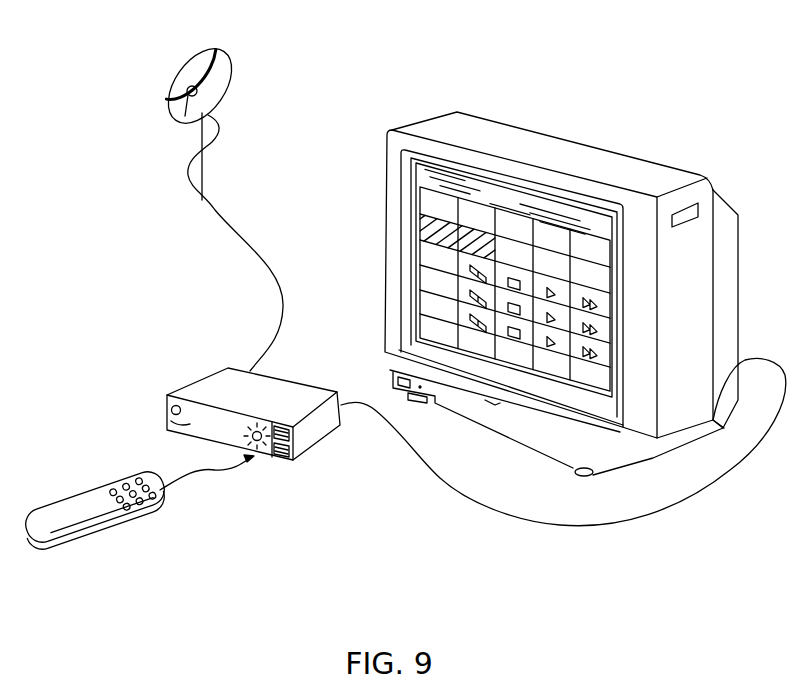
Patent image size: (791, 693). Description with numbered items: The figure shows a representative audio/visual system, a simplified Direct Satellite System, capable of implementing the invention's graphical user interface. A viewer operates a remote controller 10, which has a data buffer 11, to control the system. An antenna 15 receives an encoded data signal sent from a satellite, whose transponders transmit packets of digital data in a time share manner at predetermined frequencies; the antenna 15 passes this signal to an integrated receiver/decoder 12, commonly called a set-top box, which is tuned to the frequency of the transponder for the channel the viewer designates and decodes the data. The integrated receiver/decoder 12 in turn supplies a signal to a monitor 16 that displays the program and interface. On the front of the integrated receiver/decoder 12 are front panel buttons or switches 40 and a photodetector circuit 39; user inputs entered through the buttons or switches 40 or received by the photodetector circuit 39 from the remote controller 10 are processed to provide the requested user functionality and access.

The remote controller 10 is at (41, 551).
The data buffer 11 is at (158, 491).
The integrated receiver/decoder 12 is at (292, 393).
The antenna 15 is at (220, 61).
The monitor 16 is at (636, 169).
The photodetector circuit 39 is at (268, 459).
The front panel buttons or switches 40 is at (236, 431).